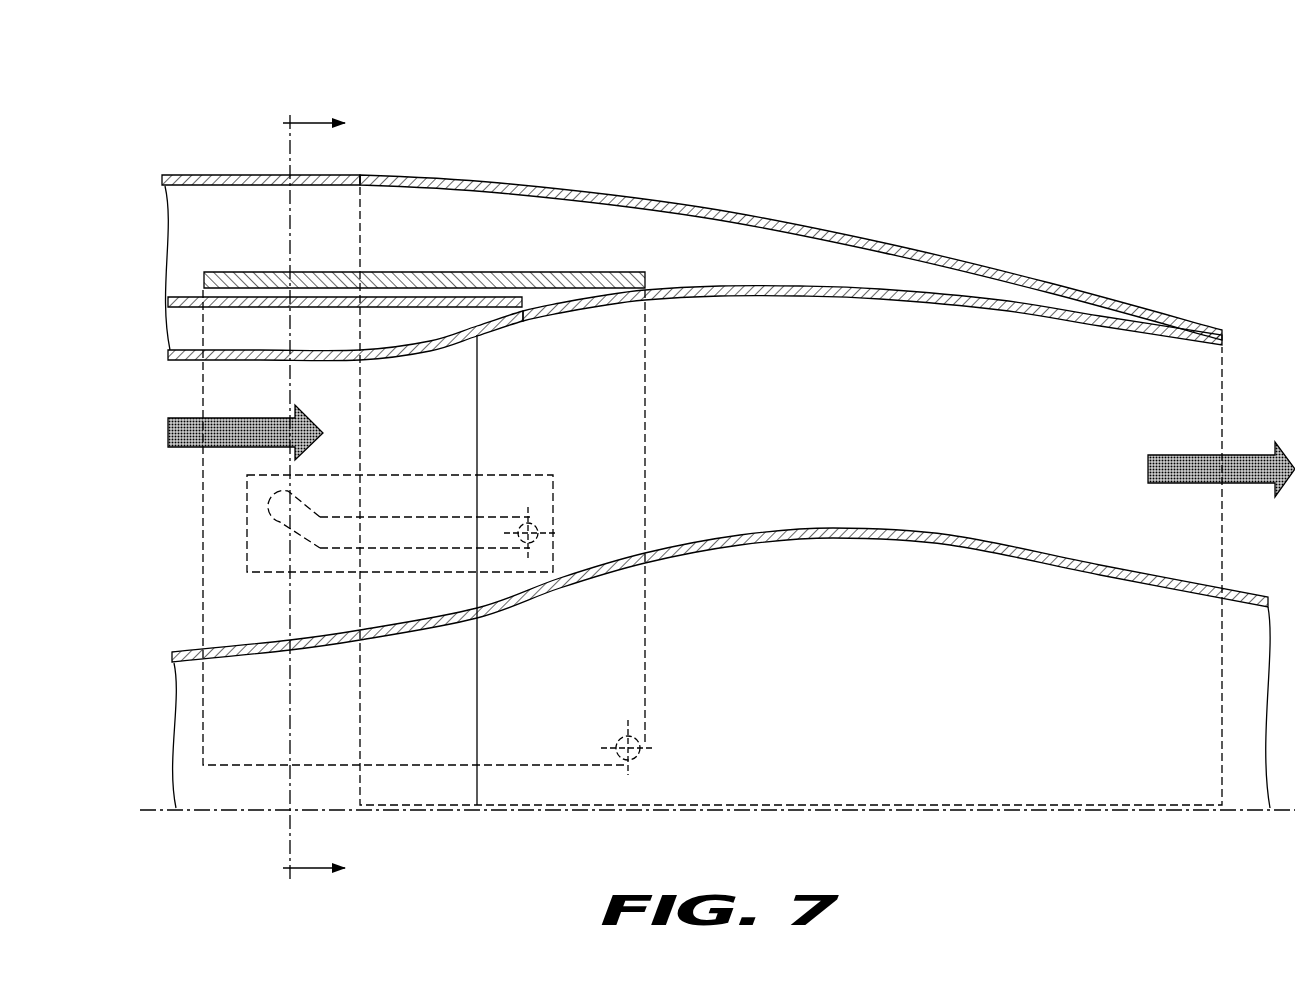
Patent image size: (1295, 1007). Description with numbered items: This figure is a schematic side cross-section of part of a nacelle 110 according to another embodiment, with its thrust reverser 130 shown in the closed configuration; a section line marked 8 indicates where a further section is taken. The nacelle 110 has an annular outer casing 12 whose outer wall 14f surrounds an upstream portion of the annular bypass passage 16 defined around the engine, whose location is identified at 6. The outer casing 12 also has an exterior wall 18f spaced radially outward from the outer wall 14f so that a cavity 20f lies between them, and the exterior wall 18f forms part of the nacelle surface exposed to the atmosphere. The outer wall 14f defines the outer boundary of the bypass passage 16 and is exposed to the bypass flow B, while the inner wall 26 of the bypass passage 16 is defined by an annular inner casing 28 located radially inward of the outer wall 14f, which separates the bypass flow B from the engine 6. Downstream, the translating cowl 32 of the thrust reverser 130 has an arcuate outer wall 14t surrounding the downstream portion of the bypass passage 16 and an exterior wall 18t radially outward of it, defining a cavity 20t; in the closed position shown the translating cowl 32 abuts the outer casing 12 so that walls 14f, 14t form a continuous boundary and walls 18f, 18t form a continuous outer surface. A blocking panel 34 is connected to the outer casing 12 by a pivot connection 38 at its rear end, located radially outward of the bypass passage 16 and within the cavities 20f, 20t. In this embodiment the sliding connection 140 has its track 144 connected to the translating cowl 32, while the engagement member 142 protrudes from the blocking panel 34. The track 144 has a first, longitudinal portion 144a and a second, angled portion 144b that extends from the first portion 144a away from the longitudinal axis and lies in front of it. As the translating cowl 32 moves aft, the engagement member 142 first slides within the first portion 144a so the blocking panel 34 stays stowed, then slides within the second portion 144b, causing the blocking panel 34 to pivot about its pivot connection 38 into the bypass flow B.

The outer casing 12 is at (174, 170).
The exterior wall 18f is at (247, 174).
The section line 8- 8 is at (305, 498).
The blocking panel 34 is at (444, 266).
The exterior wall 18t is at (540, 183).
The thrust reverser 130 is at (811, 237).
The translating cowl 32 is at (791, 219).
The nacelle 110 is at (1144, 234).
The cavity 20f is at (243, 240).
The cavity 20t is at (724, 270).
The outer wall 14f is at (178, 362).
The outer wall 14t is at (733, 300).
The bypass flow B is at (178, 436).
The bypass passage 16 is at (822, 427).
The sliding connection 140 is at (507, 603).
The inner wall 26 is at (882, 528).
The inner casing 28 is at (184, 643).
The track 144 is at (375, 618).
The first portion of the track 144a is at (447, 535).
The second portion of the track 144b is at (312, 527).
The engagement member 142 is at (517, 552).
The engine 6 is at (840, 704).
The pivot connection 38 is at (636, 758).